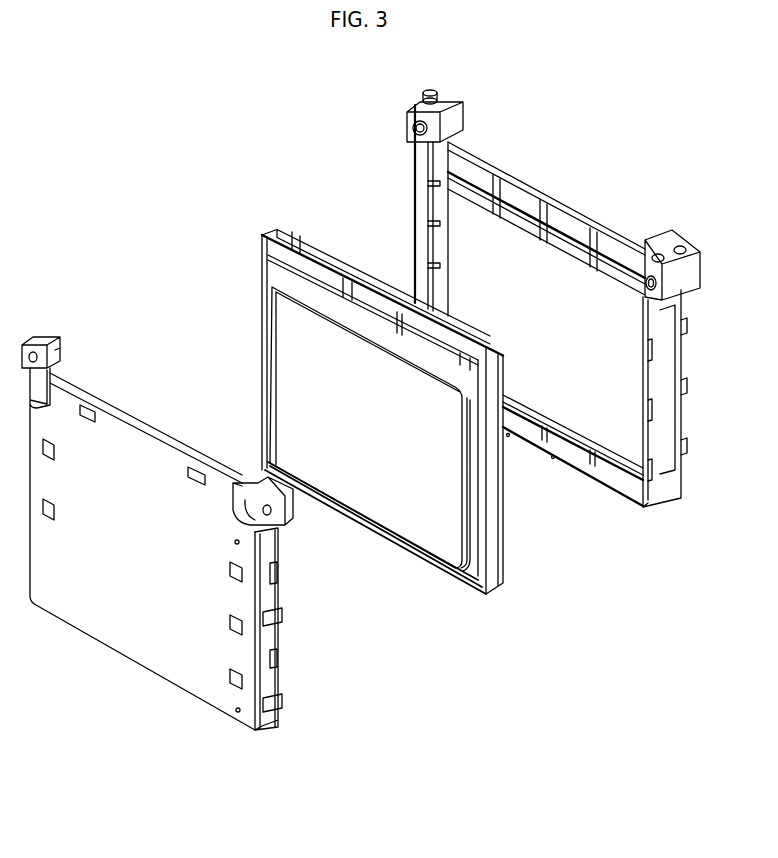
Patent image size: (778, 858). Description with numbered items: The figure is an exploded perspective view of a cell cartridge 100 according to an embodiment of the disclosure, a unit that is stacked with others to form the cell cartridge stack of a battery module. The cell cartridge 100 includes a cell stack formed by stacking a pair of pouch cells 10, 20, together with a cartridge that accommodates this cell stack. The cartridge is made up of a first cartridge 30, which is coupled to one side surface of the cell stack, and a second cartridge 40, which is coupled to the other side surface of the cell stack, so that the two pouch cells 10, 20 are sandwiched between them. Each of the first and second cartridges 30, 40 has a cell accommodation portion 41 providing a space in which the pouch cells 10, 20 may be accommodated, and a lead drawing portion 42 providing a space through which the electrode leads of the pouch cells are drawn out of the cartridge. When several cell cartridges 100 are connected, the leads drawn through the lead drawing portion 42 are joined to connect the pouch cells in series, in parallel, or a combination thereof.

The cell cartridge 100 is at (150, 120).
The pouch cell 10 is at (262, 246).
The pouch cell 20 is at (282, 226).
The first cartridge 30 is at (83, 391).
The second cartridge 40 is at (415, 161).
The cell accommodation portion 41 is at (600, 402).
The lead drawing portion 42 is at (566, 239).